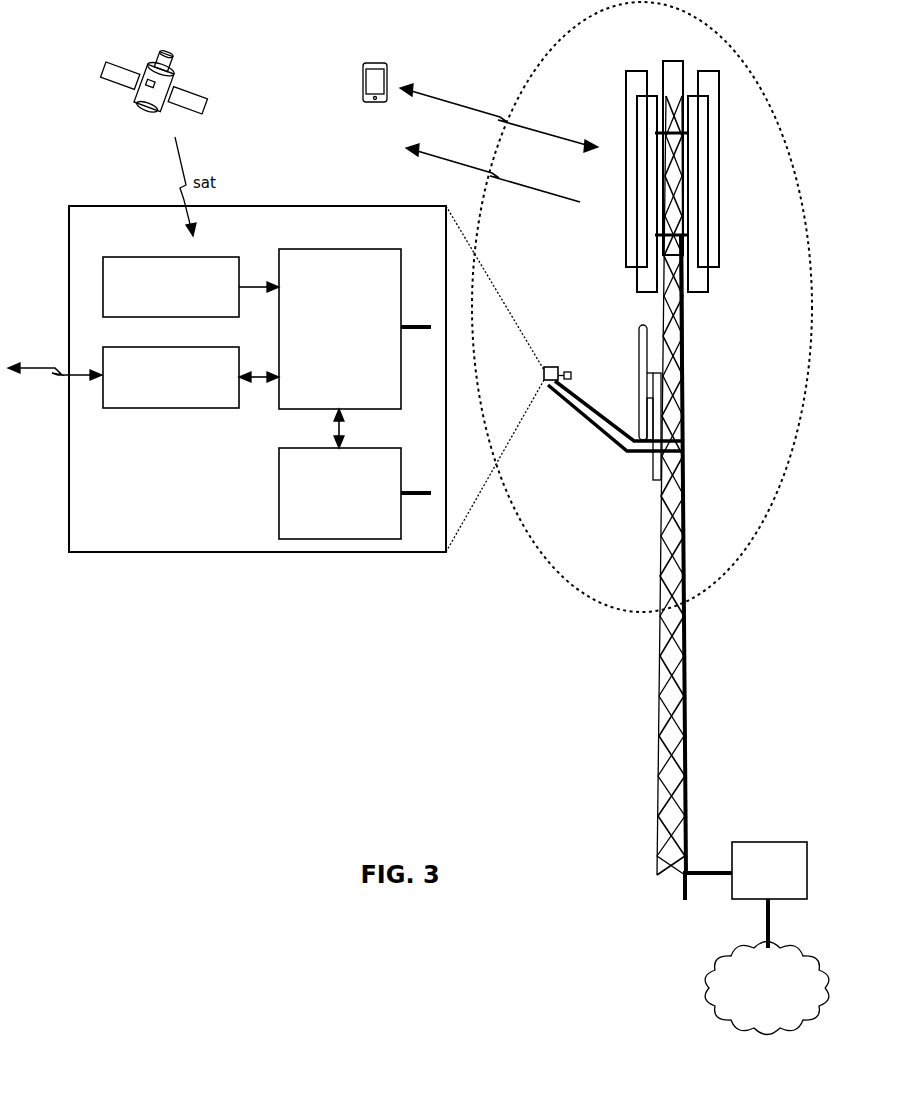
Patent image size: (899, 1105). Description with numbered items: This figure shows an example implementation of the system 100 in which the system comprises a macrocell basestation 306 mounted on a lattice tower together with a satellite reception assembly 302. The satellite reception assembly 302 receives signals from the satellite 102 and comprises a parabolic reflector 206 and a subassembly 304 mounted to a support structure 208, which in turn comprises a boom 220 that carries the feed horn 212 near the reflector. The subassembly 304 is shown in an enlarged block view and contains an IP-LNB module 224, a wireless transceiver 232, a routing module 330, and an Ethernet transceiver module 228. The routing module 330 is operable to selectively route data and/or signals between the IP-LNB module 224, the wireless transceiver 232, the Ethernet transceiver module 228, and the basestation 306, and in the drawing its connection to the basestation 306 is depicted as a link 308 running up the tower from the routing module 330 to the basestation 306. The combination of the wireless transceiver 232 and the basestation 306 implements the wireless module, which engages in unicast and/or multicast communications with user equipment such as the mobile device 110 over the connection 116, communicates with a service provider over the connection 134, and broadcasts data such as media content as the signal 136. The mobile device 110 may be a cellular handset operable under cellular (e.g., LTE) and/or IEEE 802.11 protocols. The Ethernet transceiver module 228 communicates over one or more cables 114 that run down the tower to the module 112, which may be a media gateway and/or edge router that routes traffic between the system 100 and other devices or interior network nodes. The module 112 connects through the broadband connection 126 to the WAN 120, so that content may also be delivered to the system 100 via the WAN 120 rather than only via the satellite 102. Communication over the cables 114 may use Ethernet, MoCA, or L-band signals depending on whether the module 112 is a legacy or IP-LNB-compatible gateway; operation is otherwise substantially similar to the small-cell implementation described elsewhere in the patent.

The system 100 is at (754, 80).
The satellite 102 is at (168, 70).
The mobile device 110 is at (363, 88).
The module 112 is at (769, 870).
The cables 114 is at (686, 515).
The connection 116 is at (448, 98).
The WAN 120 is at (767, 988).
The broadband connection 126 is at (771, 930).
The connection 134 is at (52, 368).
The signal 136 is at (428, 152).
The parabolic reflector 206 is at (639, 345).
The support structure 208 is at (653, 474).
The feed horn 212 is at (571, 375).
The boom 220 is at (590, 410).
The IP-LNB module 224 is at (171, 287).
The Ethernet transceiver module 228 is at (340, 493).
The wireless transceiver 232 is at (171, 377).
The satellite reception assembly 302 is at (615, 392).
The subassembly 304 is at (313, 379).
The basestation 306 is at (612, 70).
The cable 308 is at (684, 367).
The routing module 330 is at (340, 329).